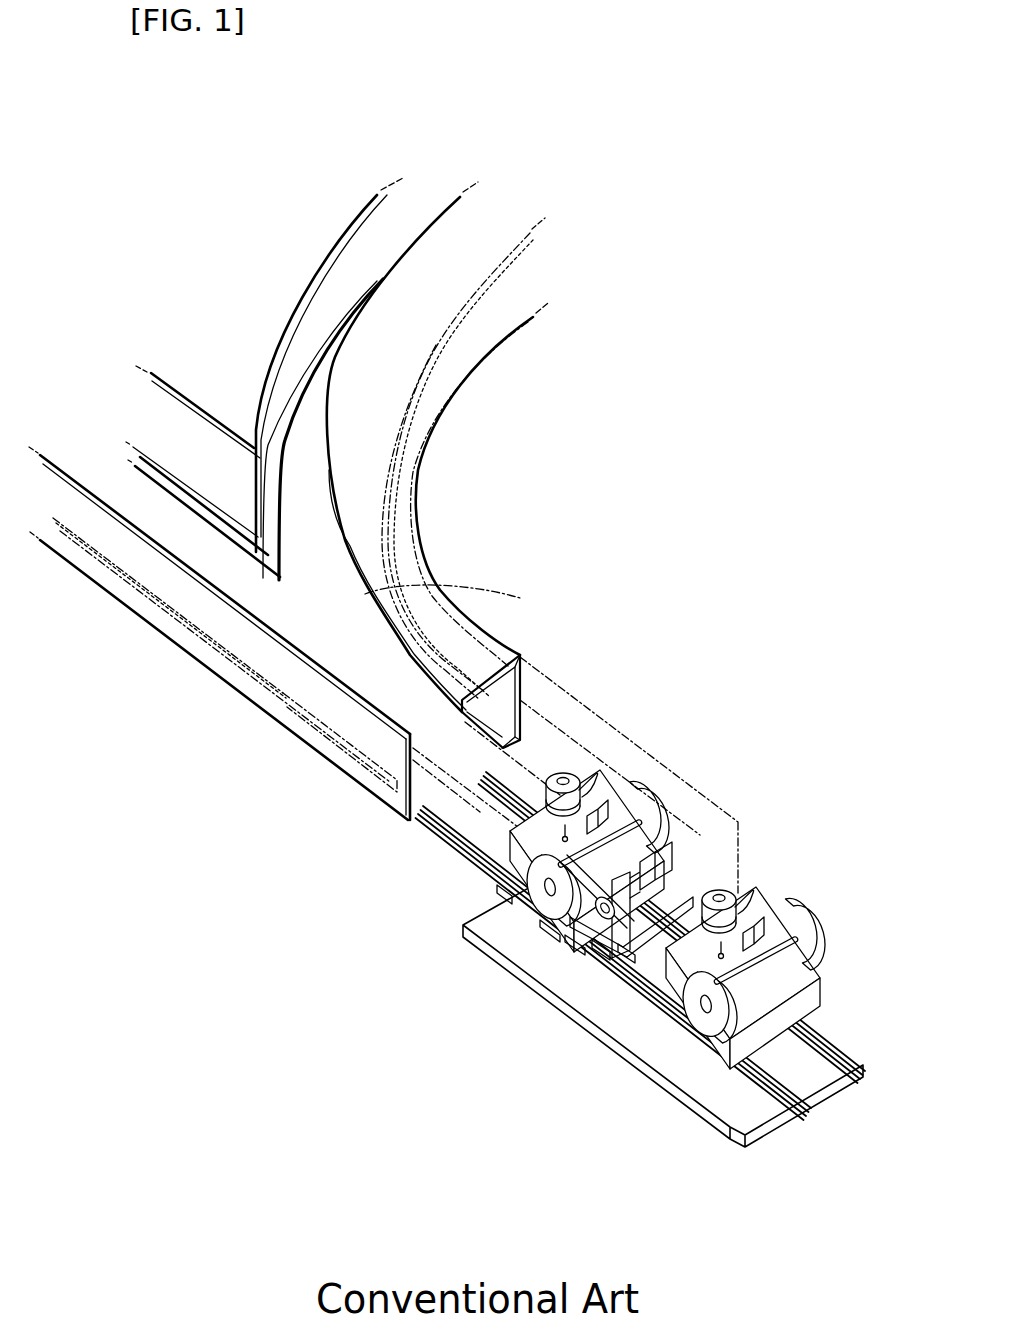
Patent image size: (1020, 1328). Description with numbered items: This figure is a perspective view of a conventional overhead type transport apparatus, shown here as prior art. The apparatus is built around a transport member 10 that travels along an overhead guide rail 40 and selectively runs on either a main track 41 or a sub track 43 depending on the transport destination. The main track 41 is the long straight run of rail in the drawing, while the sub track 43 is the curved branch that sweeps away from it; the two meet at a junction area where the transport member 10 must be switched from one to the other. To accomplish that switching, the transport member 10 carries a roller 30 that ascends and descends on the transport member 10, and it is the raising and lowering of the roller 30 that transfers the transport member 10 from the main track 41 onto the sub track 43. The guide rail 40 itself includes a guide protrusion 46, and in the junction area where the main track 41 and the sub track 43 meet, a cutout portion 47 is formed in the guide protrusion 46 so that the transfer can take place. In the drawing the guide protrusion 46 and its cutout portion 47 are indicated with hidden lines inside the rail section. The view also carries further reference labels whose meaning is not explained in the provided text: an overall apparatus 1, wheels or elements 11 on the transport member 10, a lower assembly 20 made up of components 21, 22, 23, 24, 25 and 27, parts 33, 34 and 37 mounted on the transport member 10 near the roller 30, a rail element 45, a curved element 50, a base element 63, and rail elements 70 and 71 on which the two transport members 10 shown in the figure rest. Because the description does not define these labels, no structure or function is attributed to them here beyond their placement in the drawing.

The conveying system 1 is at (812, 697).
The transport member 10 is at (708, 826).
The wheel 11 is at (655, 803).
The base unit 20 is at (567, 996).
The frame 21 is at (505, 895).
The support plate 22 is at (660, 958).
The block 23 is at (603, 945).
The guide 24 is at (577, 940).
The roller 25 is at (627, 948).
The bracket 27 is at (552, 925).
The roller 30 is at (577, 775).
The shaft 33 is at (612, 845).
The bracket 34 is at (593, 807).
The coupling 37 is at (650, 862).
The guide rail 40 is at (432, 535).
The main track 41 is at (160, 360).
The sub track 43 is at (258, 348).
The rail plate 45 is at (253, 647).
The guide protrusion 46 is at (416, 822).
The cutout portion 47 is at (390, 792).
The curved guide 50 is at (378, 627).
The base plate 63 is at (772, 1128).
The rail 70 is at (733, 1052).
The rail 71 is at (805, 1112).